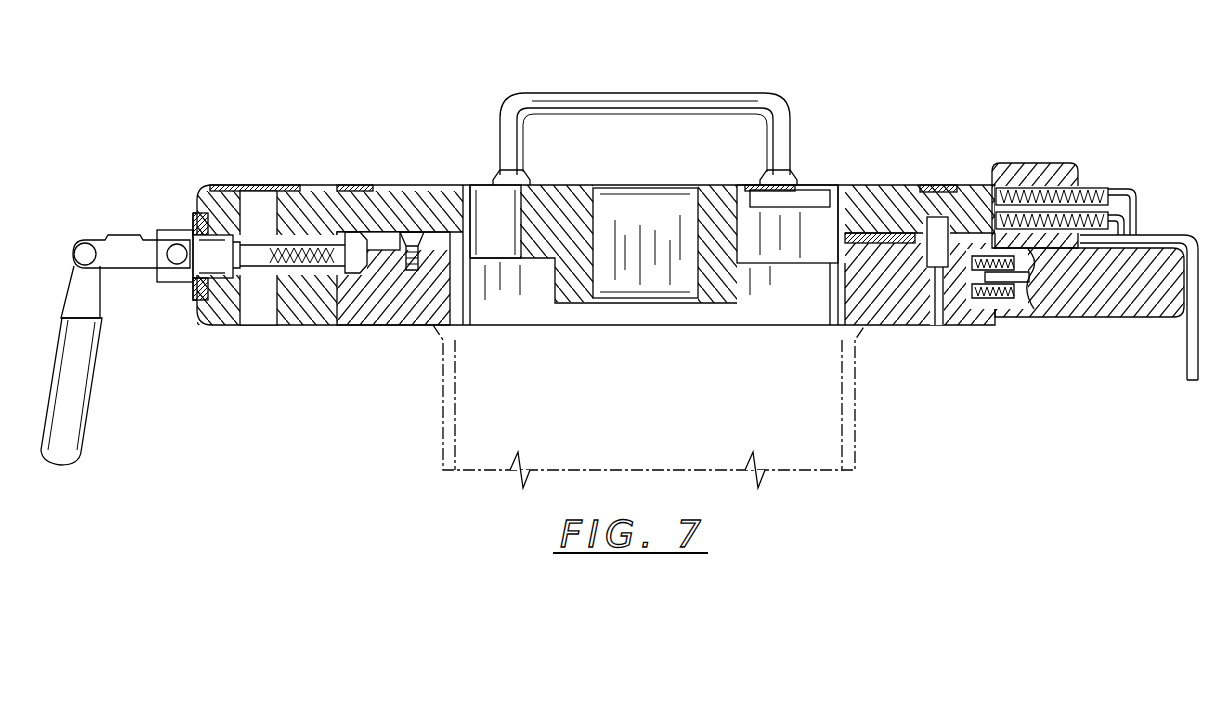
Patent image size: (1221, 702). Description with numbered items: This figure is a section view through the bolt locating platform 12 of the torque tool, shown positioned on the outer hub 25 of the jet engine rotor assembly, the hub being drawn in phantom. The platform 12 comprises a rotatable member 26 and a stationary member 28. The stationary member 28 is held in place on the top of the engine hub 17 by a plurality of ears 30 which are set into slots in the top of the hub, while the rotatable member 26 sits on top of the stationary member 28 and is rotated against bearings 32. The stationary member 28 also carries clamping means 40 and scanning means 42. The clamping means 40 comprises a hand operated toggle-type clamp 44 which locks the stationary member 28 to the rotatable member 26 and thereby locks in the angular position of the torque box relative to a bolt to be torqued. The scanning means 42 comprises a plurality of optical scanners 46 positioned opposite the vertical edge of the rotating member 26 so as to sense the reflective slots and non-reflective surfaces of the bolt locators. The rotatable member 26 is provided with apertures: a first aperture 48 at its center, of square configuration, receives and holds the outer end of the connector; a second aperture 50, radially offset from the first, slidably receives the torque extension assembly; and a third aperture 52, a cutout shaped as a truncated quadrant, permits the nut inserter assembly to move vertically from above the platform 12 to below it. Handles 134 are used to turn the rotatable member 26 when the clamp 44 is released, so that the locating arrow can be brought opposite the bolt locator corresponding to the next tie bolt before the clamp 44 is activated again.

The bolt locating platform 12 is at (619, 271).
The engine hub 17 is at (472, 300).
The outer hub 25 is at (857, 412).
The rotatable member 26 is at (391, 178).
The stationary member 28 is at (958, 332).
The ears 30 is at (835, 272).
The bearings 32 is at (428, 272).
The clamping means 40 is at (210, 328).
The scanning means 42 is at (1033, 170).
The toggle-type clamp 44 is at (125, 240).
The optical scanners 46 is at (1125, 212).
The first aperture 48 is at (688, 200).
The second aperture 50 is at (477, 193).
The third aperture 52 is at (833, 190).
The handles 134 is at (748, 93).